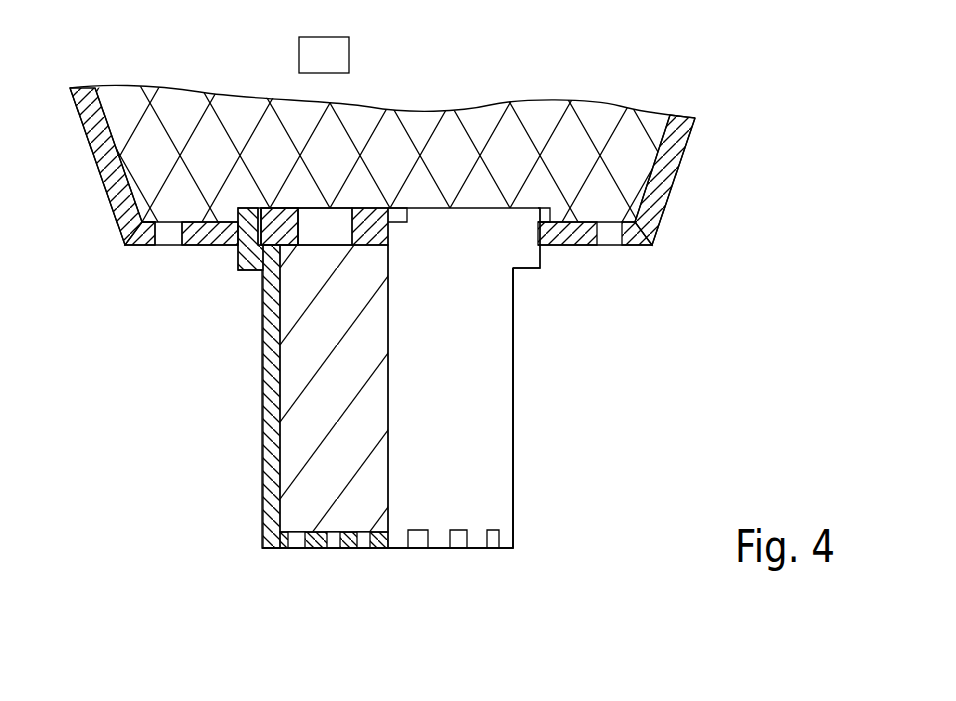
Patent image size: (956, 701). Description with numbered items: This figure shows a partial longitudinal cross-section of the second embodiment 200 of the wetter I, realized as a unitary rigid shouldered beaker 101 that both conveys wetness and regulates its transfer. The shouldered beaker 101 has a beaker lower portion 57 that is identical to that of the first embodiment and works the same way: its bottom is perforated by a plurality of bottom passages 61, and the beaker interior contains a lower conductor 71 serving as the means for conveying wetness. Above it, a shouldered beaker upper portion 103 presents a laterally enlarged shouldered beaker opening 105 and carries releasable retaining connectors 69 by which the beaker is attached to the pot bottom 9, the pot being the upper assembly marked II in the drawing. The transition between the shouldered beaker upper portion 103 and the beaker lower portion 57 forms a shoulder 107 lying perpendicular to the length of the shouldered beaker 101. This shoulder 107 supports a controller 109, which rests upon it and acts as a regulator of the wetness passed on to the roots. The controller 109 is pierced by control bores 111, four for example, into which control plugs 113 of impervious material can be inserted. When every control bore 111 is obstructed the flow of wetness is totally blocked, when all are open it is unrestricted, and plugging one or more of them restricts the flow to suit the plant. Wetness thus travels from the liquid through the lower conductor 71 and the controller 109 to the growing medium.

The control plug 113 is at (333, 57).
The upper housing assembly II is at (677, 177).
The pot bottom 9 is at (140, 248).
The releasable retaining connector 69 is at (223, 217).
The shouldered beaker opening 105 is at (257, 200).
The controller 109 is at (290, 220).
The control bore 111 is at (337, 223).
The shouldered beaker upper portion 103 is at (563, 268).
The lower conductor 71 is at (318, 425).
The shoulder 107 is at (288, 244).
The bottom passage 61 is at (423, 548).
The beaker lower portion 57 is at (253, 510).
The shouldered beaker 101 is at (515, 512).
The wetter I is at (515, 428).
The second embodiment 200 is at (637, 442).